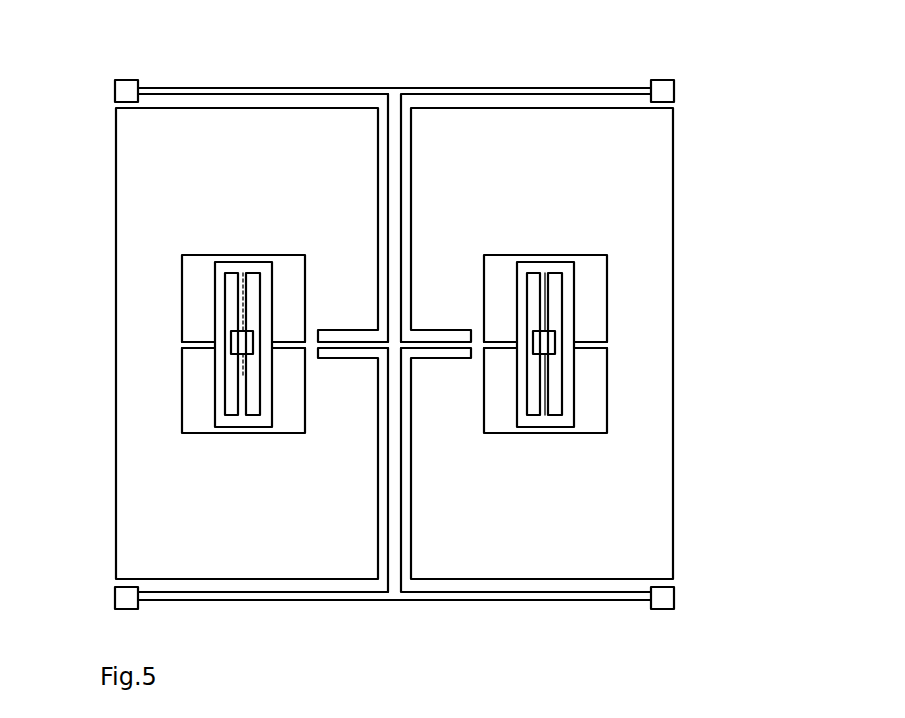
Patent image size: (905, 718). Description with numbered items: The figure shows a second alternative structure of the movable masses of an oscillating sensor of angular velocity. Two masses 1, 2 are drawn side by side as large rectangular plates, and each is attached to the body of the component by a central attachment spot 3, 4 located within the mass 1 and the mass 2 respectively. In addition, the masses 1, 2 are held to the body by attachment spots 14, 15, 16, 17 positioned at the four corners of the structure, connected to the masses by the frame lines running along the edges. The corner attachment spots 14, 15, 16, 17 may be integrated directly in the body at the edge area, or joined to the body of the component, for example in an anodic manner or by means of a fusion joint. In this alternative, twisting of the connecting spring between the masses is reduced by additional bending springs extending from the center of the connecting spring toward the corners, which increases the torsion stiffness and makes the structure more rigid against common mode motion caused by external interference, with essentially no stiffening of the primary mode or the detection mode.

The mass 1 is at (218, 115).
The mass 2 is at (673, 140).
The attachment spot 3 is at (243, 343).
The attachment spot 4 is at (550, 343).
The attachment spot 14 is at (127, 90).
The attachment spot 15 is at (120, 593).
The attachment spot 16 is at (663, 88).
The attachment spot 17 is at (665, 603).